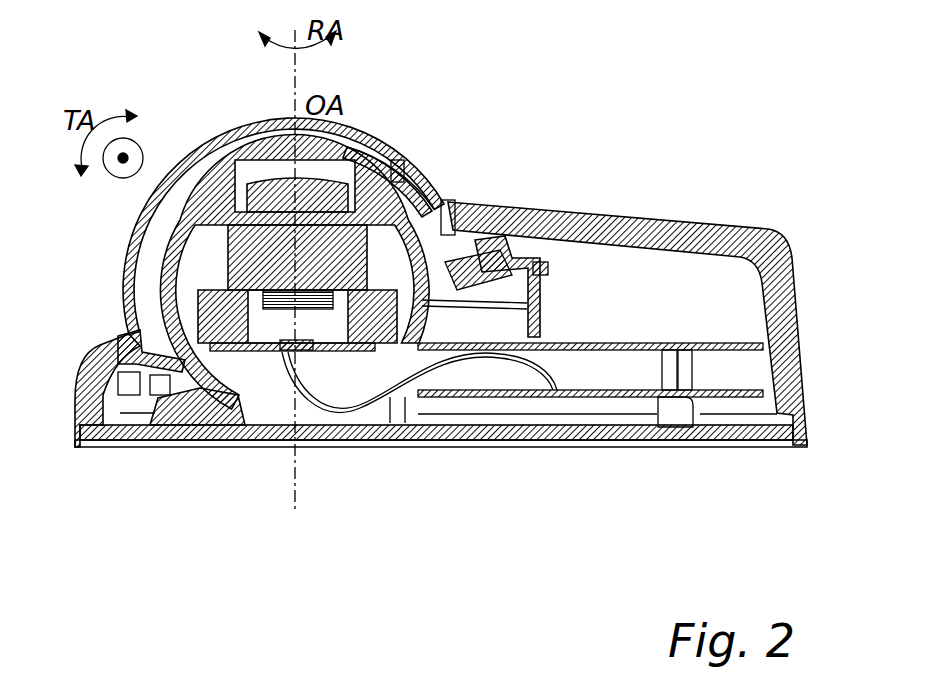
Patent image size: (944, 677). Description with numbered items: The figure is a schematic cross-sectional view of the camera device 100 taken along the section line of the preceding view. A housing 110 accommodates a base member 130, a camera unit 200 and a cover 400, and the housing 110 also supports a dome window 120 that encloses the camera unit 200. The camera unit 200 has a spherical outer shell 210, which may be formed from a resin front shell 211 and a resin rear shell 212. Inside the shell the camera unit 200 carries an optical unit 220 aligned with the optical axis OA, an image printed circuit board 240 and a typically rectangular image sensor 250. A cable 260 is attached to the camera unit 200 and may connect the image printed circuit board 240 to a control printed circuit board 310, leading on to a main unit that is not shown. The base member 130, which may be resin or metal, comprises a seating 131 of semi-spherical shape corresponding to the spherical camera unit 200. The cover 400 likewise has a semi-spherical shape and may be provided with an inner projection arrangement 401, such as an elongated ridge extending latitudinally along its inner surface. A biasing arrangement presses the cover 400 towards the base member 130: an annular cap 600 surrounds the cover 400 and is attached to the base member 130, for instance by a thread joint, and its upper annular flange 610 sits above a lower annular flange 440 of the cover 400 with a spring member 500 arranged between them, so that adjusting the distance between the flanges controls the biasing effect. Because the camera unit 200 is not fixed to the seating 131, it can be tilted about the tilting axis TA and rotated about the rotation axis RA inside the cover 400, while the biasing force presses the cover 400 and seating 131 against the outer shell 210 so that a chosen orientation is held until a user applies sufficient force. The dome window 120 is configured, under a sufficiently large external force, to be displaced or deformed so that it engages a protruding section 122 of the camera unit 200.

The camera device 100 is at (240, 95).
The housing 110 is at (793, 327).
The dome window 120 is at (124, 308).
The protruding section 122 is at (214, 163).
The base member 130 is at (722, 438).
The seating 131 is at (187, 430).
The camera unit 200 is at (607, 582).
The outer shell 210 is at (522, 527).
The front shell 211 is at (452, 350).
The rear shell 212 is at (412, 400).
The optical unit 220 is at (213, 430).
The image printed circuit board 240 is at (257, 430).
The image sensor 250 is at (330, 430).
The cable 260 is at (523, 365).
The control printed circuit board 310 is at (690, 428).
The cover 400 is at (423, 173).
The projection arrangement 401 is at (397, 163).
The lower annular flange 440 is at (545, 262).
The spring member 500 is at (512, 256).
The annular cap 600 is at (548, 262).
The upper annular flange 610 is at (450, 210).